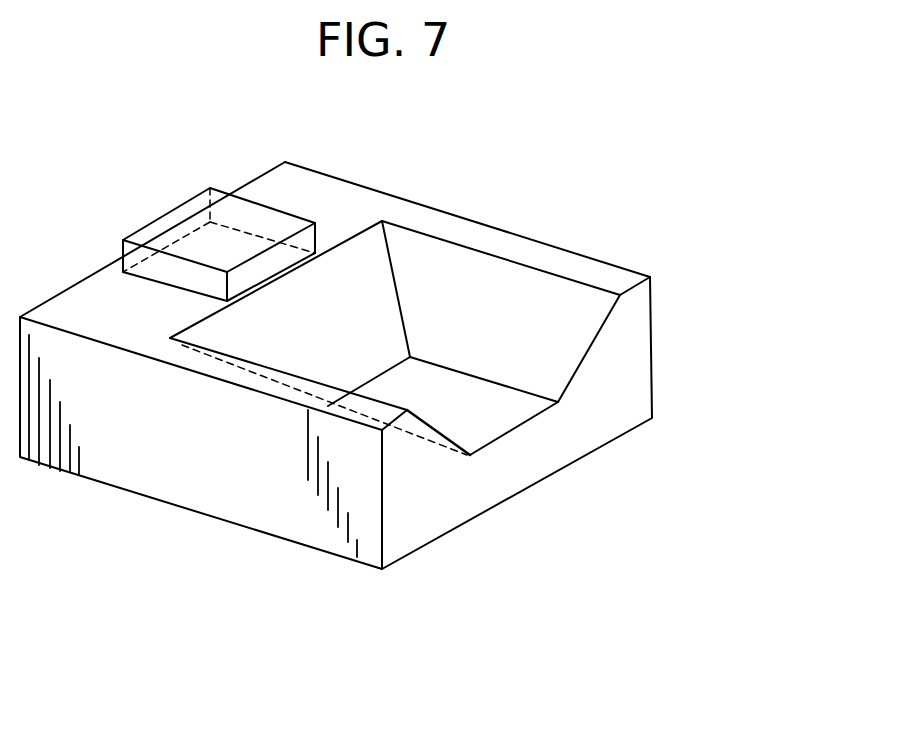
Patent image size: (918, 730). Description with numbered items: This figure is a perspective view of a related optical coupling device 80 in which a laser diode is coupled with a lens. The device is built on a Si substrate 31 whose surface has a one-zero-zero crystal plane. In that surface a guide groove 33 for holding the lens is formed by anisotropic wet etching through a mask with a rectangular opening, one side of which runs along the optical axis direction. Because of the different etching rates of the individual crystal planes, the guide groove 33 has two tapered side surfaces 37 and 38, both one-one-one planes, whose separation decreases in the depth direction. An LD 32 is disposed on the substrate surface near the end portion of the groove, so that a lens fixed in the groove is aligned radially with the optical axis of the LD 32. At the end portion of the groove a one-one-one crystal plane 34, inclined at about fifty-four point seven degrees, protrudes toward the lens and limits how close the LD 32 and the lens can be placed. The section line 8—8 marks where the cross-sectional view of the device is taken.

The Si substrate 31 is at (190, 444).
The LD 32 is at (240, 213).
The guide groove 33 is at (556, 348).
The {111} crystal plane 34 is at (337, 277).
The tapered side surface 37 is at (560, 293).
The tapered side surface 38 is at (433, 428).
The optical coupling device 80 is at (477, 212).
The section line 8— 8 is at (183, 196).